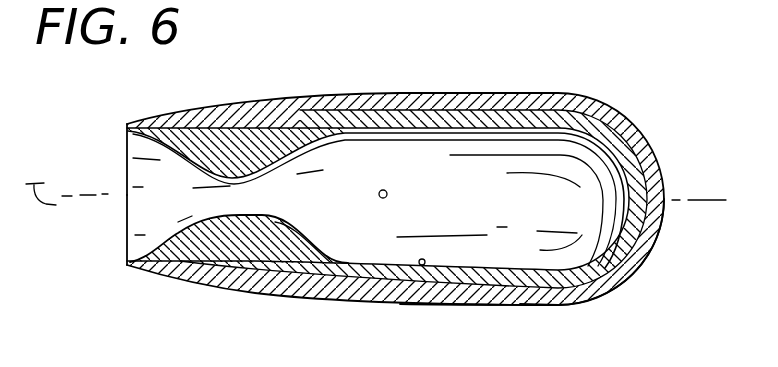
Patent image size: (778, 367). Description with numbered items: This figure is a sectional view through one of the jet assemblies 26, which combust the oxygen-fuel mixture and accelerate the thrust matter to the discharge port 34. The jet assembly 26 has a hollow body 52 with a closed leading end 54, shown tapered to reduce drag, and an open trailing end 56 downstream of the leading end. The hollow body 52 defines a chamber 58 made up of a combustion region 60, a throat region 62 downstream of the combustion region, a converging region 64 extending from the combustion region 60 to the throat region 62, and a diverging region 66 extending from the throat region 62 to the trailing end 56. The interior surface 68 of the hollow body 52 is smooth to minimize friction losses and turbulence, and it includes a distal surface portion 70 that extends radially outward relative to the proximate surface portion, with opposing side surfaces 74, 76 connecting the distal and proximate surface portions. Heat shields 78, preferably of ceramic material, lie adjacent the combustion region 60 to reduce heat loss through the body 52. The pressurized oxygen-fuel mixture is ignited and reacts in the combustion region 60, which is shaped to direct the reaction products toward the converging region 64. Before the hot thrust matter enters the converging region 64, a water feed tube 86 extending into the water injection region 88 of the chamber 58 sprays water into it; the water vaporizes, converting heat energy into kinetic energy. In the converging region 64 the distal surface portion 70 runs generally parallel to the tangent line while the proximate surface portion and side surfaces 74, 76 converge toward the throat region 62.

The jet assembly 26 is at (537, 96).
The discharge port 34 is at (128, 228).
The hollow body 52 is at (467, 297).
The closed leading end 54 is at (628, 262).
The open trailing end 56 is at (128, 190).
The chamber 58 is at (450, 157).
The combustion region 60 is at (568, 203).
The throat region 62 is at (222, 196).
The converging region 64 is at (288, 181).
The diverging region 66 is at (152, 196).
The interior surface 68 is at (422, 265).
The distal surface portion 70 is at (523, 214).
The side surface 74 is at (250, 172).
The side surface 76 is at (282, 220).
The heat shield 78 is at (550, 302).
The water feed tube 86 is at (388, 194).
The water injection region 88 is at (347, 150).